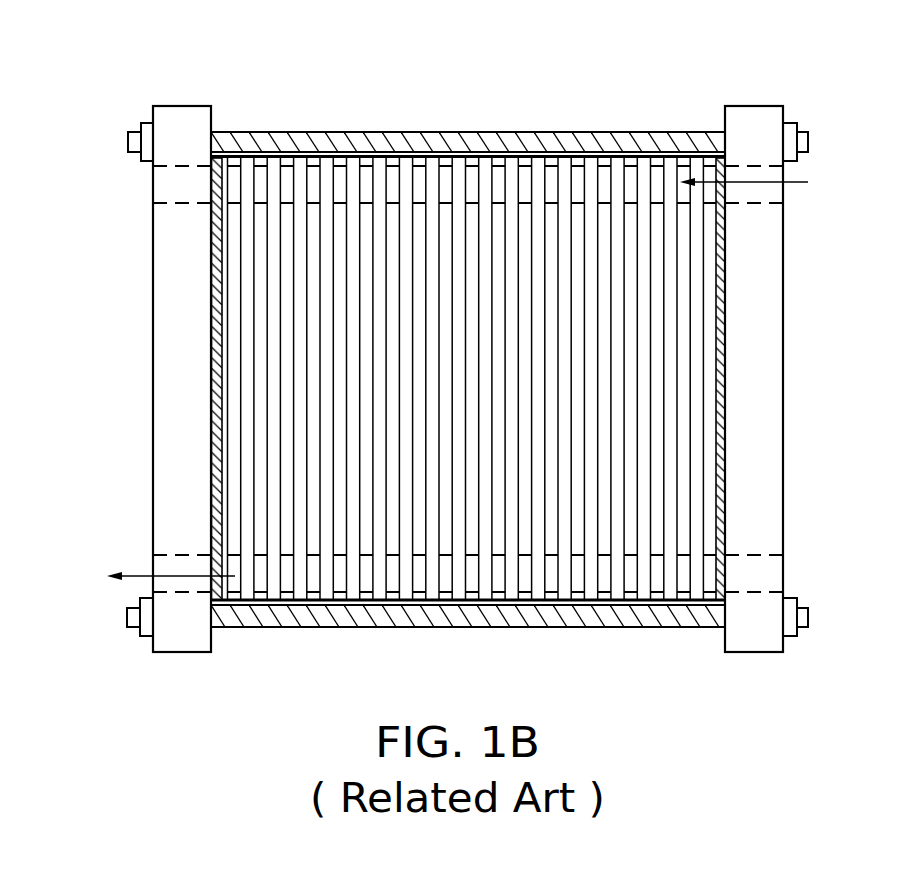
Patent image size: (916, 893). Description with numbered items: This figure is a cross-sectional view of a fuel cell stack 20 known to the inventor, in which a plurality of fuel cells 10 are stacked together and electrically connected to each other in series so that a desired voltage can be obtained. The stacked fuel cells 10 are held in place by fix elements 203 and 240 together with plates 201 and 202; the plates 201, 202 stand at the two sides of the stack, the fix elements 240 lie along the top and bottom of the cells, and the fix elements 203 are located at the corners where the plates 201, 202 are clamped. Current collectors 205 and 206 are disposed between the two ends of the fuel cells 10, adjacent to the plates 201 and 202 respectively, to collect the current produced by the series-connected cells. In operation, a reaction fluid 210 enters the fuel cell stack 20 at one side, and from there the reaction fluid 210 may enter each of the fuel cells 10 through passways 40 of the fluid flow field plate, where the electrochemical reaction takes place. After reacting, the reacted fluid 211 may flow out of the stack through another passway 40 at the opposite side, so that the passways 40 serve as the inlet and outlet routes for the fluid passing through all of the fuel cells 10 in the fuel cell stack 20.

The fuel cell stack 20 is at (473, 368).
The fuel cell 10 is at (473, 380).
The passway 40 is at (325, 200).
The fix element 240 is at (600, 132).
The plate 201 is at (783, 372).
The plate 202 is at (153, 372).
The fix element 203 is at (138, 124).
The current collector 205 is at (725, 307).
The current collector 206 is at (212, 307).
The reaction fluid 210 is at (792, 182).
The reacted fluid 211 is at (142, 575).